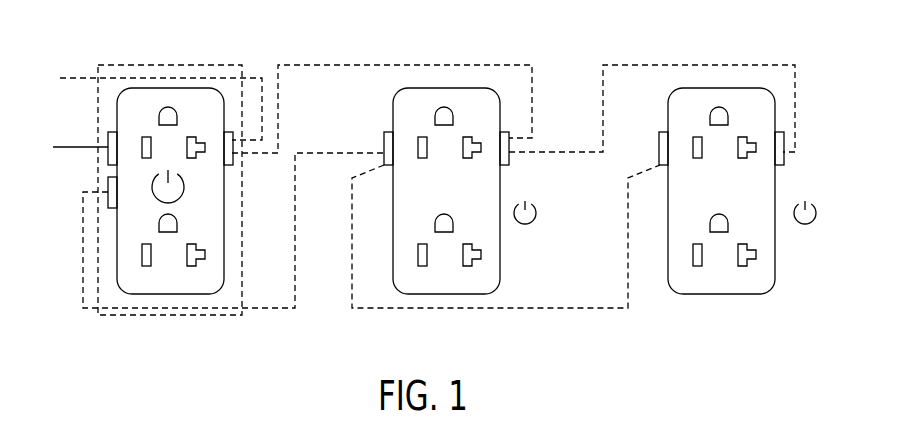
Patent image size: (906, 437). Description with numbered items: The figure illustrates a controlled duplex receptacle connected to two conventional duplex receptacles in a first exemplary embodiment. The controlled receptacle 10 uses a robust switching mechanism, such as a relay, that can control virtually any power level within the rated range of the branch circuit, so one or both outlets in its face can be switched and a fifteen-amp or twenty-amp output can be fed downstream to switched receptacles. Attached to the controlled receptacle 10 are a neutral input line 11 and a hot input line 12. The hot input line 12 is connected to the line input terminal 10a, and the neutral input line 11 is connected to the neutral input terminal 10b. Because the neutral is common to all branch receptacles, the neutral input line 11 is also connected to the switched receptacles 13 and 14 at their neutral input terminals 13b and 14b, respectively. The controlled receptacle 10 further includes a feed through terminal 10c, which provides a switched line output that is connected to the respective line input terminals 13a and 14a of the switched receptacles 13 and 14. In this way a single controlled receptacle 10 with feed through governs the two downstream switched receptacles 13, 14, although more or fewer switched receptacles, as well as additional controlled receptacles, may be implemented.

The controlled receptacle 10 is at (170, 97).
The line input terminal 10a is at (112, 132).
The neutral input terminal 10b is at (232, 165).
The feed through terminal 10c is at (108, 200).
The neutral input line 11 is at (63, 78).
The hot input line 12 is at (53, 147).
The switched receptacle 13 is at (443, 95).
The line input terminal 13a is at (386, 132).
The neutral input terminal 13b is at (505, 130).
The switched receptacle 14 is at (718, 95).
The line input terminal 14a is at (661, 132).
The neutral input terminal 14b is at (778, 130).